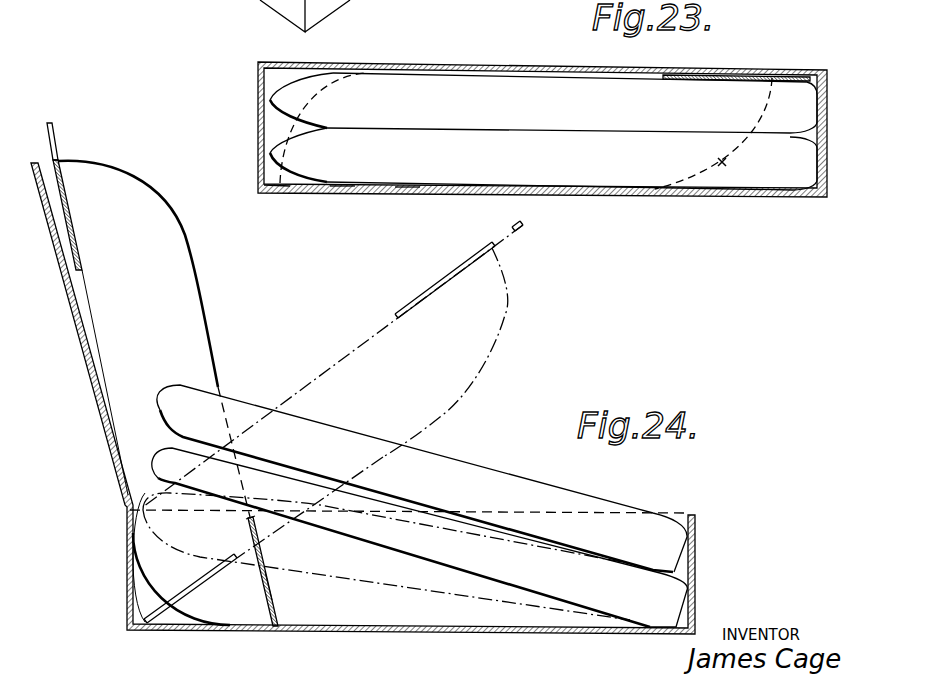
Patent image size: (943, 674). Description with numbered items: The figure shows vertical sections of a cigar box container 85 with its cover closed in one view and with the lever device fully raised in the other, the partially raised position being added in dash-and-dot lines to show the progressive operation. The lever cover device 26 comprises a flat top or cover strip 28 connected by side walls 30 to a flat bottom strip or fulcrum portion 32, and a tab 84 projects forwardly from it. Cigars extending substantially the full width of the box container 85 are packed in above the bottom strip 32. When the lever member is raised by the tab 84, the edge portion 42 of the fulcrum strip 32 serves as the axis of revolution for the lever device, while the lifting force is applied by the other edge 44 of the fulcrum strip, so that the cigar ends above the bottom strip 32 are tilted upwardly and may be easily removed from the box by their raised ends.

In FIG. 23, the lever cover device 26 is at (724, 165).
In FIG. 24, the lever cover device 26 is at (207, 318).
In FIG. 23, the cover strip 28 is at (730, 72).
In FIG. 24, the cover strip 28 is at (73, 238).
In FIG. 23, the side walls 30 is at (437, 87).
In FIG. 24, the side walls 30 is at (133, 200).
In FIG. 23, the fulcrum strip 32 is at (343, 190).
In FIG. 24, the fulcrum strip 32 is at (270, 593).
In FIG. 23, the edge portion 42 is at (273, 190).
In FIG. 24, the edge portion 42 is at (277, 627).
In FIG. 23, the edge 44 is at (405, 190).
In FIG. 24, the edge 44 is at (250, 518).
In FIG. 24, the tab 84 is at (53, 137).
In FIG. 23, the box container 85 is at (830, 147).
In FIG. 24, the box container 85 is at (698, 567).